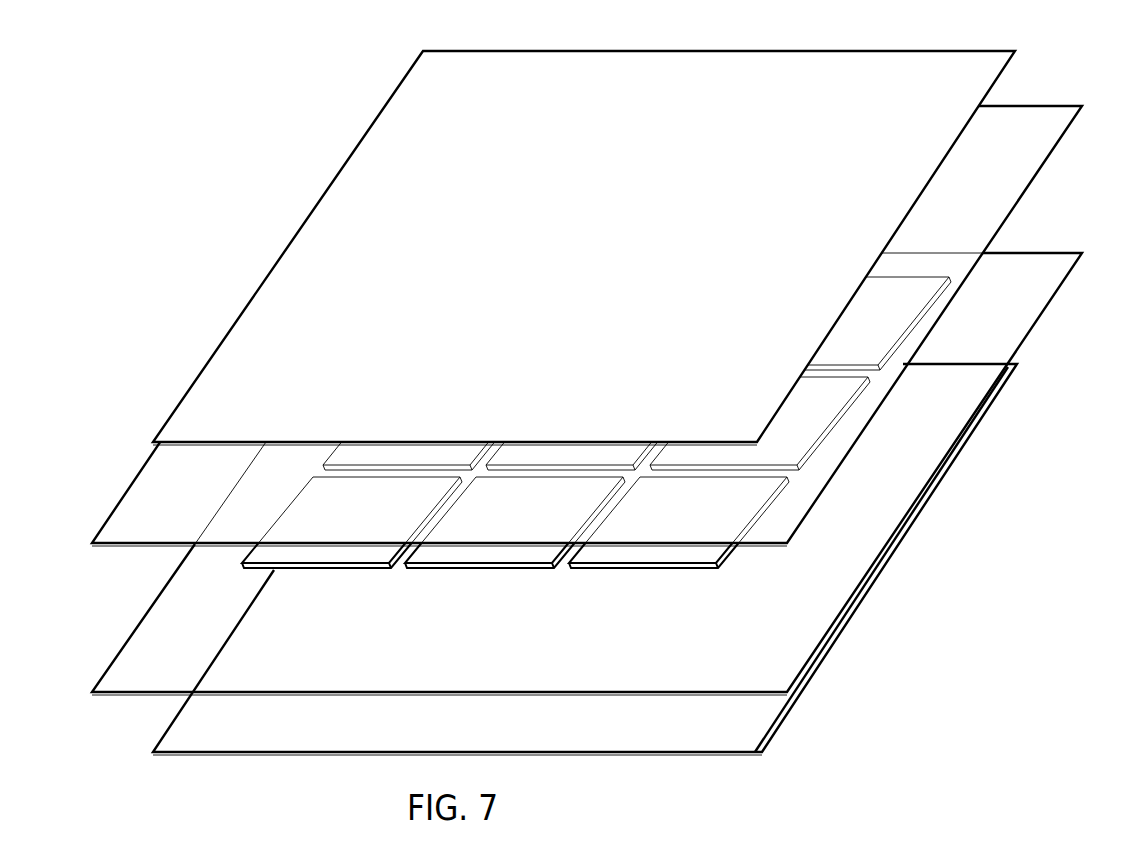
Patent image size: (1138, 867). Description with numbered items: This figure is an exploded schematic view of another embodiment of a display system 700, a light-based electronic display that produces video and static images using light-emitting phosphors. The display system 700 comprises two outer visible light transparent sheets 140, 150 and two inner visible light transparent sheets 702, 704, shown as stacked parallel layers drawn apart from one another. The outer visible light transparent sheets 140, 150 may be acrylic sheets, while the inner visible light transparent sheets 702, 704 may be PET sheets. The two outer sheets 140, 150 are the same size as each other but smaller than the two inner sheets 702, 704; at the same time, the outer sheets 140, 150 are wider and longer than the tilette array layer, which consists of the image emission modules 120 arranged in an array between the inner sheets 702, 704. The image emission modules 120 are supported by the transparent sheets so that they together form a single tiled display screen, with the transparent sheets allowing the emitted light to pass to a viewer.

The display system 700 is at (138, 68).
The first visible light transparent sheet 140 is at (352, 137).
The inner visible light transparent sheet 702 is at (122, 497).
The image emission modules 120 is at (240, 562).
The inner visible light transparent sheet 704 is at (1035, 336).
The second visible light transparent sheet 150 is at (842, 647).